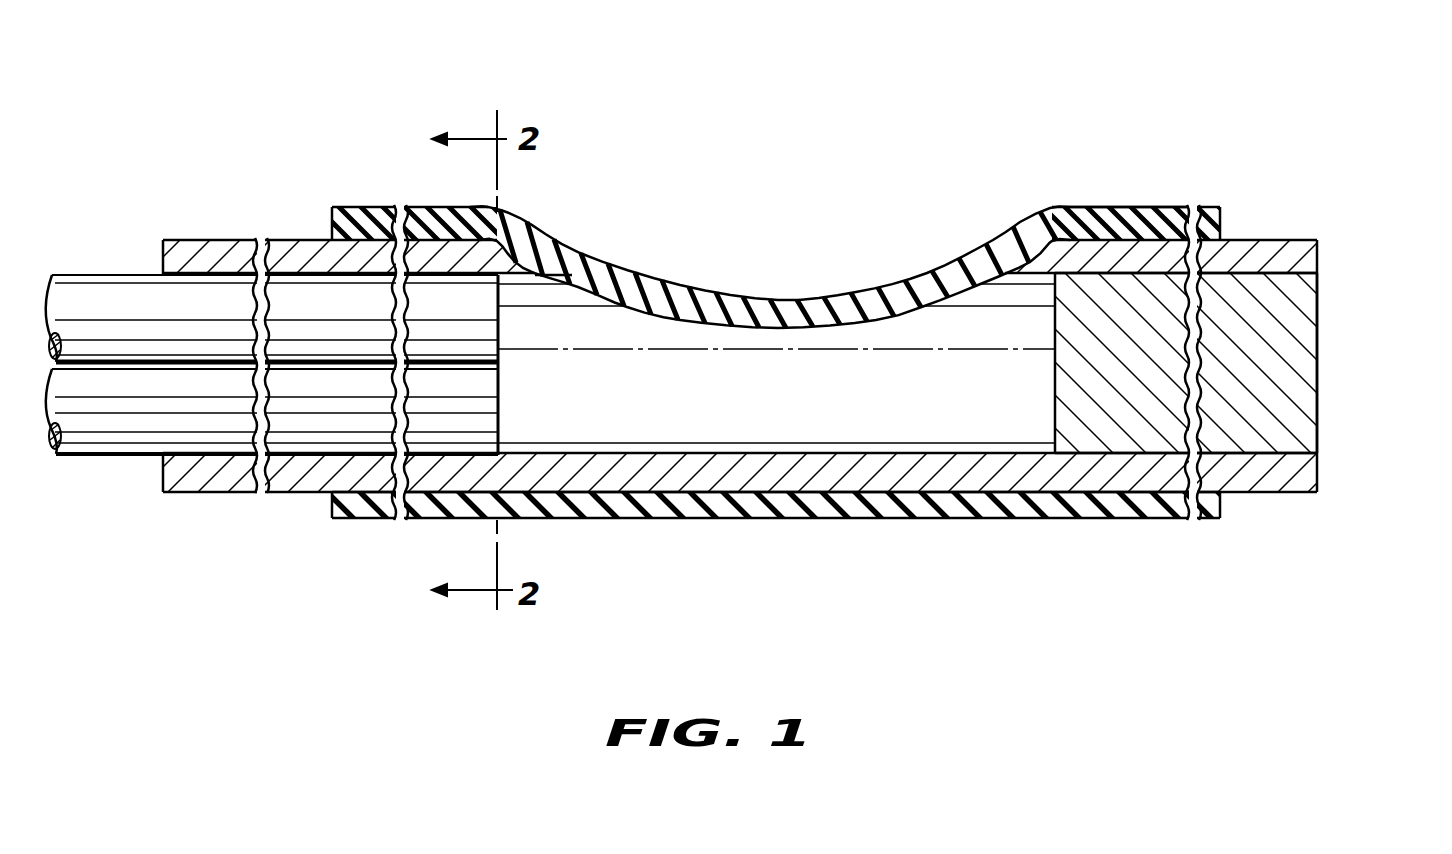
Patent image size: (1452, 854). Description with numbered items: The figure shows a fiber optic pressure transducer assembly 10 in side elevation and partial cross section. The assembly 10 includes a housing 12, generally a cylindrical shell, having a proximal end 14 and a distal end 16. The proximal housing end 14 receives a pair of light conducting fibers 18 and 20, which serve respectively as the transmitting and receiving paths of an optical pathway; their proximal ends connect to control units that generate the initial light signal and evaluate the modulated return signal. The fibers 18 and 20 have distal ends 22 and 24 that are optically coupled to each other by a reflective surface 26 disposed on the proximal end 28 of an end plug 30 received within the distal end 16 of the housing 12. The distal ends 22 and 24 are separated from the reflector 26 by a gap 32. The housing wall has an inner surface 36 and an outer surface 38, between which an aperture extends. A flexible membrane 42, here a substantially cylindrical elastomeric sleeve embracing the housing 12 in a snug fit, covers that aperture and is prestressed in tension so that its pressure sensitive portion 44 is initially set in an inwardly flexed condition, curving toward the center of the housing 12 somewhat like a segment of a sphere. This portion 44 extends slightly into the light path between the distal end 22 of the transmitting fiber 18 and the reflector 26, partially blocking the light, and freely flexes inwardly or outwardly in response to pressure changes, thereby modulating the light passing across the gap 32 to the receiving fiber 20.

The pressure transducer assembly 10 is at (1040, 107).
The housing 12 is at (1259, 231).
The proximal end 14 is at (163, 238).
The distal end 16 is at (1320, 232).
The light conducting fiber 18 is at (110, 272).
The light conducting fiber 20 is at (107, 458).
The distal end 22 is at (500, 318).
The distal end 24 is at (500, 393).
The reflective surface 26 is at (1052, 375).
The proximal end 28 is at (1281, 343).
The end plug 30 is at (1319, 428).
The gap 32 is at (783, 413).
The inner surface 36 is at (1088, 270).
The outer surface 38 is at (1065, 206).
The flexible membrane 42 is at (362, 208).
The pressure sensitive portion 44 is at (787, 294).